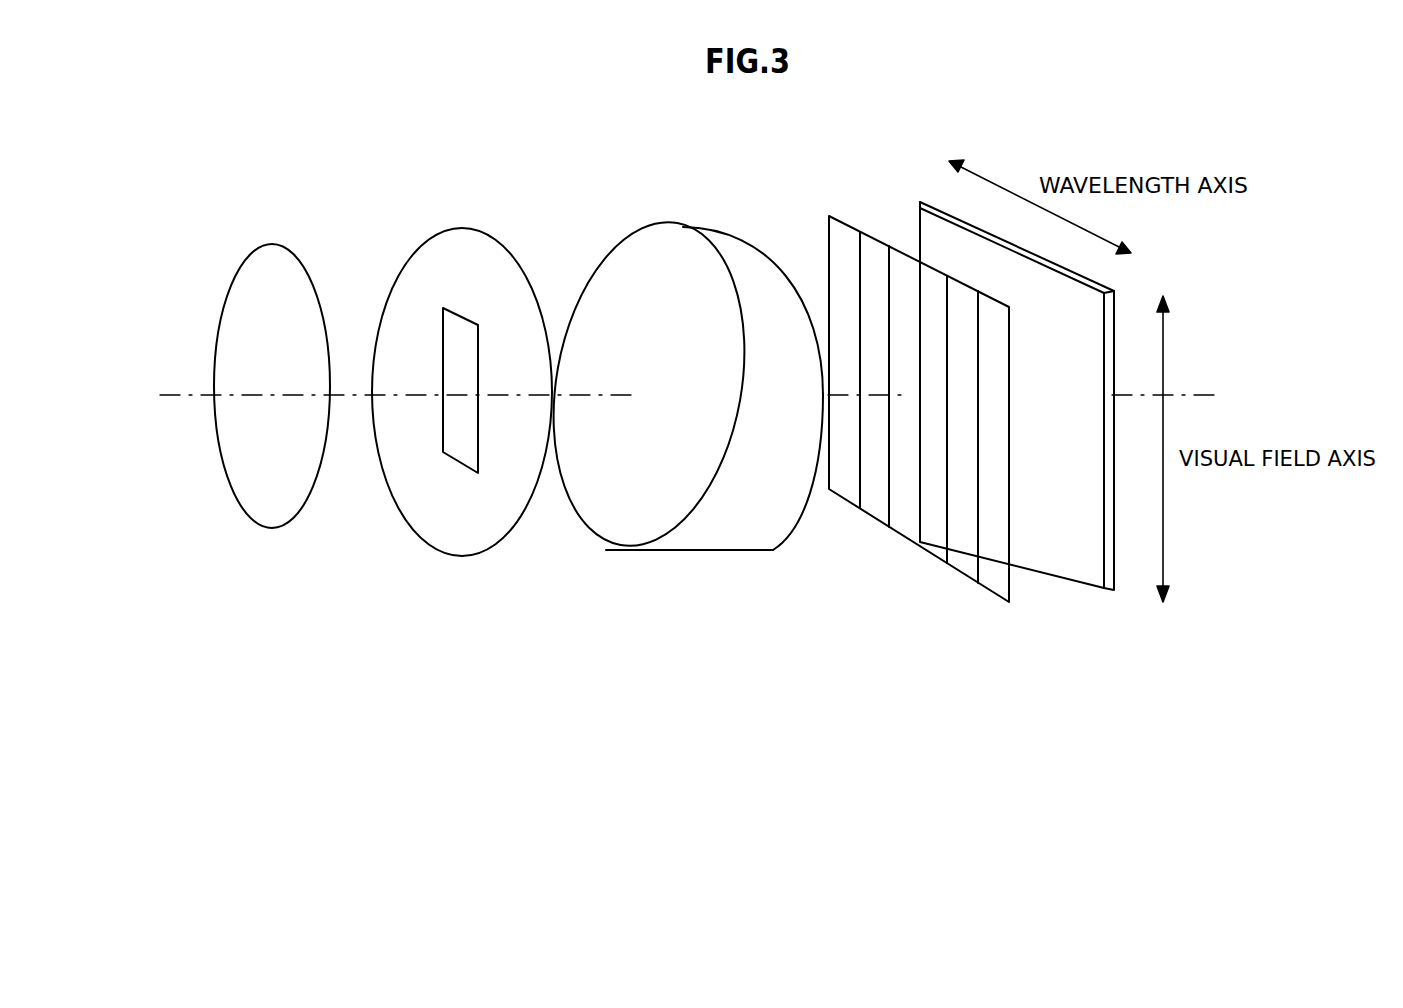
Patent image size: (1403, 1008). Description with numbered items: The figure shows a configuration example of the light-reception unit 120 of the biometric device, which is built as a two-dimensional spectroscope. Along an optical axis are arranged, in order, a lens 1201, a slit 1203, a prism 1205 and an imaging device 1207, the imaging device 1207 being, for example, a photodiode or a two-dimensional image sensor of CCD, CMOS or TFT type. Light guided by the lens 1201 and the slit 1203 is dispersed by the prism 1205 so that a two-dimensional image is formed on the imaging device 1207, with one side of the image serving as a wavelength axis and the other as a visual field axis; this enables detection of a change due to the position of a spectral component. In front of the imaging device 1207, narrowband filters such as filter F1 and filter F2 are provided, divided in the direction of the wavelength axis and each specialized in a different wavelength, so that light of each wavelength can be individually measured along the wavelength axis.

The light-reception unit 120 is at (433, 733).
The lens 1201 is at (267, 529).
The slit 1203 is at (463, 556).
The prism 1205 is at (668, 551).
The filter F1 is at (843, 494).
The filter F2 is at (873, 510).
The imaging device 1207 is at (1105, 591).